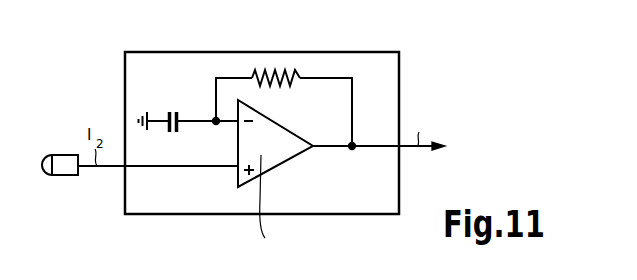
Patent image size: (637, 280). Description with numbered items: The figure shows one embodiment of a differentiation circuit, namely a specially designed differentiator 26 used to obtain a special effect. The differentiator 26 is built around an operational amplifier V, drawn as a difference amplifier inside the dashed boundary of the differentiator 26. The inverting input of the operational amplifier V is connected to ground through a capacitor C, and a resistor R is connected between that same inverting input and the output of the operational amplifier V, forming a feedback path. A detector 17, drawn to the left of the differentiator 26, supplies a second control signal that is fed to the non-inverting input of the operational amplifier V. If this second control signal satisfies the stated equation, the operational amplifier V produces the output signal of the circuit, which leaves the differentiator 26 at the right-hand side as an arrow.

The detector 17 is at (63, 163).
The differentiator 26 is at (285, 146).
The capacitor C is at (176, 112).
The resistor R is at (277, 87).
The operational amplifier V is at (272, 151).